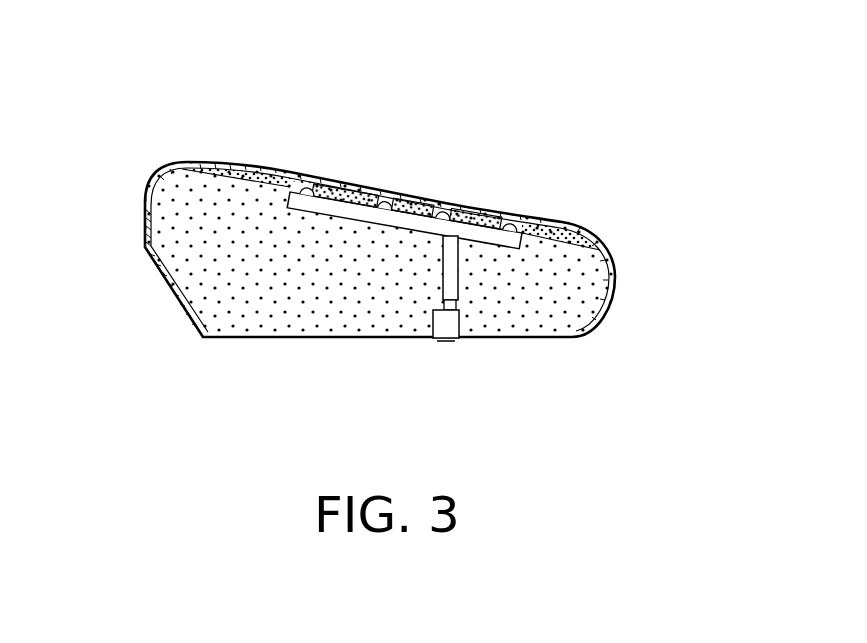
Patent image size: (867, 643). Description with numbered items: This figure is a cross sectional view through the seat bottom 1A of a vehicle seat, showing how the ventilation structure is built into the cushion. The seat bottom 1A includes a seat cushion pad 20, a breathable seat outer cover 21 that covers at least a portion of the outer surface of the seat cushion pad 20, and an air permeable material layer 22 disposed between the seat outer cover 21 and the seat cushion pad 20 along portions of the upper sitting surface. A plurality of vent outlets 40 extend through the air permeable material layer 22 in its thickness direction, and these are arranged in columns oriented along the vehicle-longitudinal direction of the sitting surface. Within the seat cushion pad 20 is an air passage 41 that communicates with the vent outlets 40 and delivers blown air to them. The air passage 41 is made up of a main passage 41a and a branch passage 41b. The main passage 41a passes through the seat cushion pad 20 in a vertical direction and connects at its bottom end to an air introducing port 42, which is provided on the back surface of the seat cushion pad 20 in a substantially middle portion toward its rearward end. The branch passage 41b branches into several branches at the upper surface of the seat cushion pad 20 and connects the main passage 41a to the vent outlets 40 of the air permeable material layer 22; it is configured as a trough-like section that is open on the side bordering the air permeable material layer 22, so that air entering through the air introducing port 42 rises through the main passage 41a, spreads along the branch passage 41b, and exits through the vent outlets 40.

The seat bottom 1A is at (200, 143).
The seat cushion pad 20 is at (282, 328).
The seat outer cover 21 is at (223, 162).
The air permeable material layer 22 is at (273, 168).
The vent outlets 40 is at (307, 177).
The air passage 41 is at (437, 315).
The main passage 41a is at (452, 292).
The branch passage 41b is at (493, 243).
The air introducing port 42 is at (448, 342).